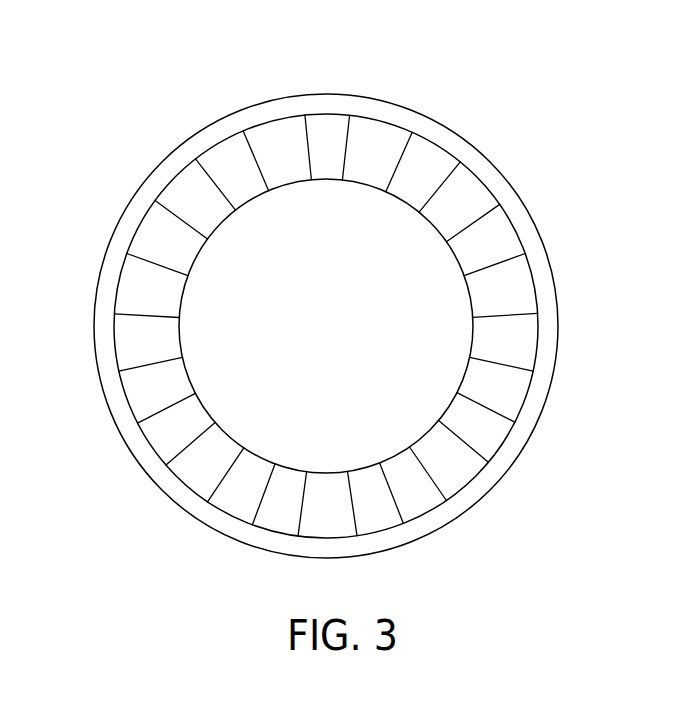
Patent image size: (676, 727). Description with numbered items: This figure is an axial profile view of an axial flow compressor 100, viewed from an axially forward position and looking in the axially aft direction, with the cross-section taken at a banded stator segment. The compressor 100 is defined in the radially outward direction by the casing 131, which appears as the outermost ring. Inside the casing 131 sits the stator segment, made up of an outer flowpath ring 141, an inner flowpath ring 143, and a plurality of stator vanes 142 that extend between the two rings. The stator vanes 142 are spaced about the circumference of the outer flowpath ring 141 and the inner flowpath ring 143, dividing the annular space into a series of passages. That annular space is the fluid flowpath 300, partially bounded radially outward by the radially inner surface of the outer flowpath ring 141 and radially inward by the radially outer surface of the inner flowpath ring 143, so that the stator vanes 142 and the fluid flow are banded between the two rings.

The axial flow compressor 100 is at (98, 97).
The casing 131 is at (493, 172).
The outer flowpath ring 141 is at (522, 244).
The stator vanes 142 is at (490, 268).
The inner flowpath ring 143 is at (475, 357).
The fluid flowpath 300 is at (503, 443).